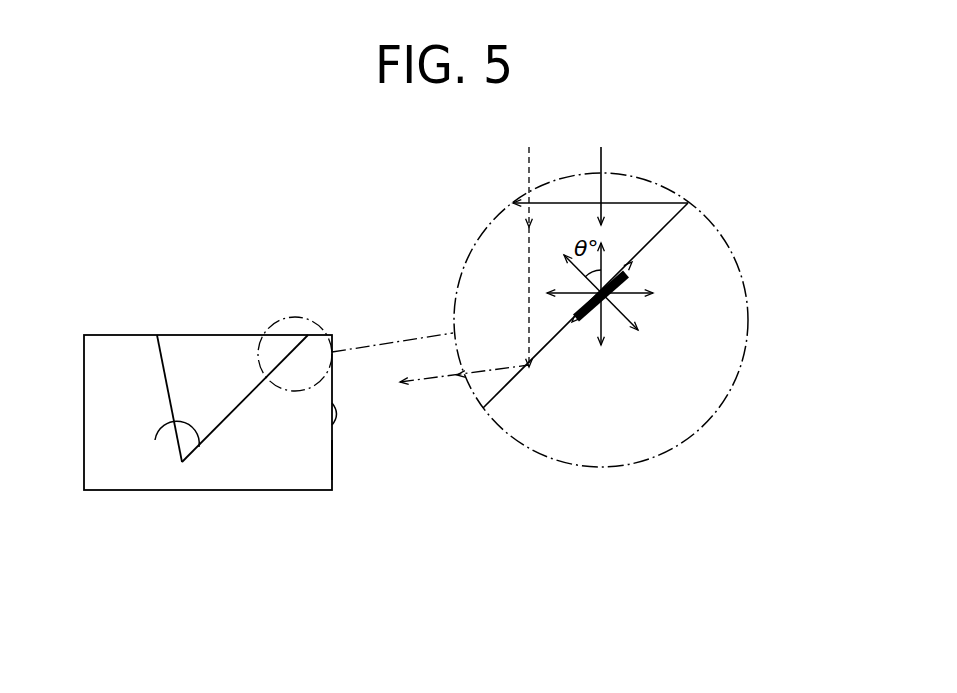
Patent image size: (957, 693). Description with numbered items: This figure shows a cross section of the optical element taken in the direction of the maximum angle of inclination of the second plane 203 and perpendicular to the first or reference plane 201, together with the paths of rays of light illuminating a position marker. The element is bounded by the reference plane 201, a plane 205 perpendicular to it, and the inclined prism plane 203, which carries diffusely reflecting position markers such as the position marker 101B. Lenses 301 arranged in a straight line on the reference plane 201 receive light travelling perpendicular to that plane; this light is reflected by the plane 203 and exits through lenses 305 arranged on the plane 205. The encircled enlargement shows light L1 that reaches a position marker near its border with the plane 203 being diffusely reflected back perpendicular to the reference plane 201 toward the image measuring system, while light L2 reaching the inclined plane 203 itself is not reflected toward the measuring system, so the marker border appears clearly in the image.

The reference plane 201 is at (280, 490).
The plane 203 is at (242, 400).
The plane 205 is at (333, 455).
The lenses 301 is at (237, 490).
The lenses 305 is at (336, 412).
The position marker 101B is at (155, 440).
The light L1 is at (601, 160).
The light L2 is at (433, 378).